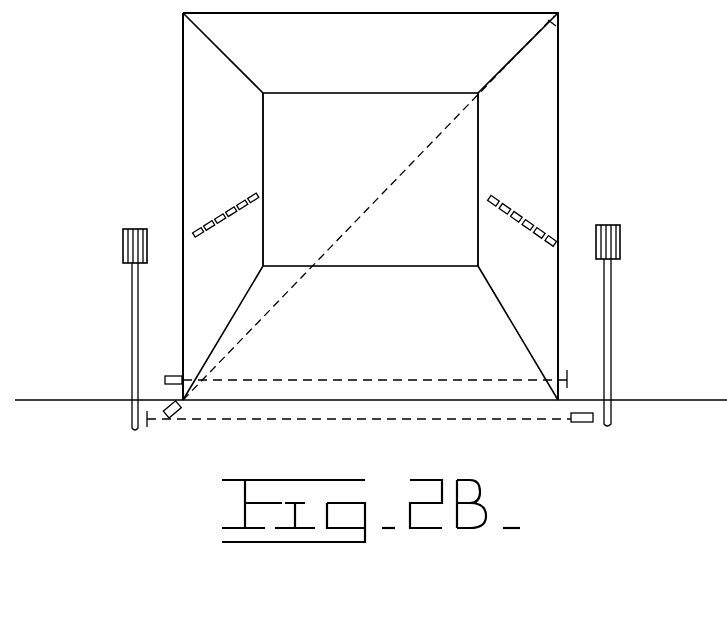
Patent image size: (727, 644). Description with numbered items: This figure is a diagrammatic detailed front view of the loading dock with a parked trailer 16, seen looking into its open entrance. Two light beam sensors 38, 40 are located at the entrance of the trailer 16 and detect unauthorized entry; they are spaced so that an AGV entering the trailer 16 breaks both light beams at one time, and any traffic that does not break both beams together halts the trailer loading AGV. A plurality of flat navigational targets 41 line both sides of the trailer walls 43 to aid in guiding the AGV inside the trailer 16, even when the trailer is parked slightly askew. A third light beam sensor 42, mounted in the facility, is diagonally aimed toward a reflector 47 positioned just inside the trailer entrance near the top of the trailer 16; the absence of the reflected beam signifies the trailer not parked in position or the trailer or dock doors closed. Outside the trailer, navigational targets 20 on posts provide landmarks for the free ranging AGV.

The trailer 16 is at (380, 50).
The navigational targets 20 is at (138, 229).
The light beam sensor 38 is at (176, 376).
The light beam sensor 40 is at (582, 422).
The navigational targets 41 is at (250, 196).
The third light beam sensor 42 is at (178, 416).
The trailer walls 43 is at (232, 127).
The reflector 47 is at (393, 208).